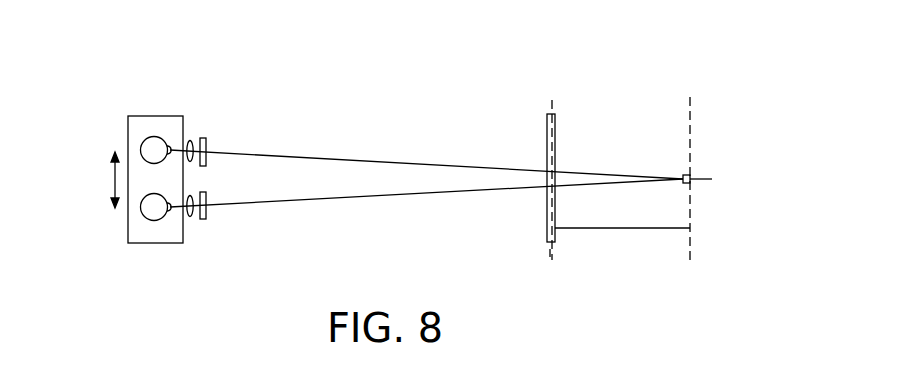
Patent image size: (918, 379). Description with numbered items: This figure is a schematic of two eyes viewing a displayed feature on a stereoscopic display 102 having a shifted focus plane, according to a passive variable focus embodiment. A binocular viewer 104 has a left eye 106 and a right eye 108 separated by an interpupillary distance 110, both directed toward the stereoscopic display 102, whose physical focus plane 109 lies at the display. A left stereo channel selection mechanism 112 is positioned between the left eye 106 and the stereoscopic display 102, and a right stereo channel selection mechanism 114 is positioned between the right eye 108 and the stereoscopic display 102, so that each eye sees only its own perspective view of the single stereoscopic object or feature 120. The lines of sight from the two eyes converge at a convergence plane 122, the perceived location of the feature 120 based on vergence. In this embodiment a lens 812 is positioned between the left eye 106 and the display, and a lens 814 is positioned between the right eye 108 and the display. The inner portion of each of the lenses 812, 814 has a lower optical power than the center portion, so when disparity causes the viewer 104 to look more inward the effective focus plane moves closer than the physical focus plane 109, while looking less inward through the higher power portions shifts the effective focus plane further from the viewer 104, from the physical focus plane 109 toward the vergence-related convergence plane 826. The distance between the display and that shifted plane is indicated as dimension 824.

The stereoscopic display 102 is at (547, 118).
The viewer 104 is at (152, 116).
The left eye 106 is at (150, 148).
The right eye 108 is at (150, 210).
The focus plane 109 is at (550, 253).
The interpupillary distance 110 is at (113, 178).
The left stereo channel selection mechanism 112 is at (207, 143).
The right stereo channel selection mechanism 114 is at (207, 216).
The stereoscopic object or feature 120 is at (530, 157).
The convergence plane 122 is at (688, 158).
The lens 812 is at (190, 140).
The lens 814 is at (190, 217).
The focal distance 824 is at (625, 230).
The vergence-related convergence plane 826 is at (692, 240).